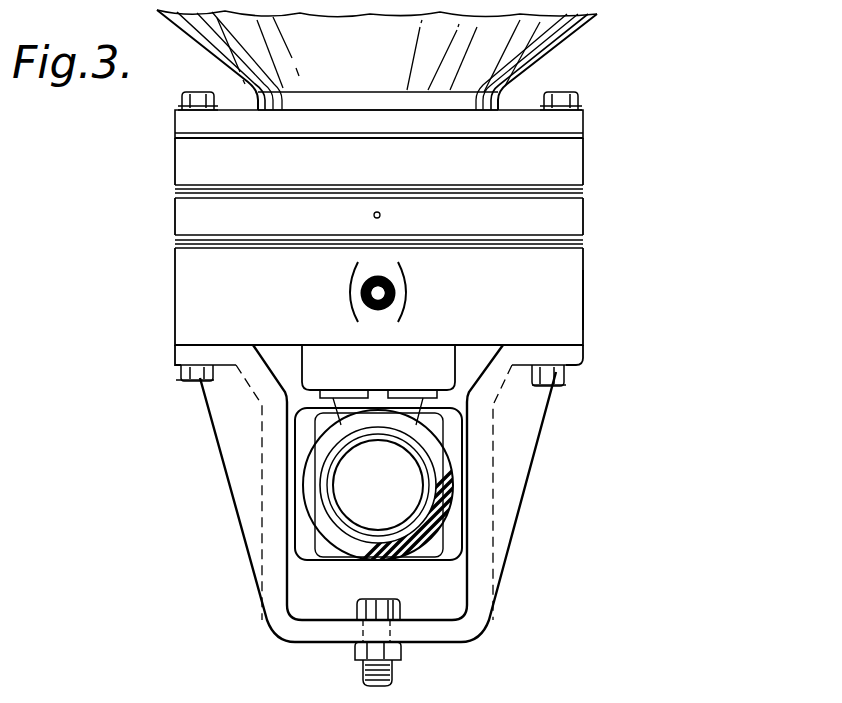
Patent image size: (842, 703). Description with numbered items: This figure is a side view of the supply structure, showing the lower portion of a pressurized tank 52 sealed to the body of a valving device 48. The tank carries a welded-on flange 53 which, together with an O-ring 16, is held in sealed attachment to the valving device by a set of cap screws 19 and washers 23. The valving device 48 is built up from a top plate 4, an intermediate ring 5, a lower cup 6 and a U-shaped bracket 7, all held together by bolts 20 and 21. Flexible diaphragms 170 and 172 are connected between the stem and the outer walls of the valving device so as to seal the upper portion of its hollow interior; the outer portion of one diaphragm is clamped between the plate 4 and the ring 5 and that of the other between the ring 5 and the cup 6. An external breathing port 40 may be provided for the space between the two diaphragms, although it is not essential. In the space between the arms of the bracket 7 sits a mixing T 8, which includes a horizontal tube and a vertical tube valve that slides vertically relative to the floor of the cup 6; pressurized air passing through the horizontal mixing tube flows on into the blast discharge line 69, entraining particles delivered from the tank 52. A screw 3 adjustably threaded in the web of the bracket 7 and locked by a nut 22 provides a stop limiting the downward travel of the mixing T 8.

The pressurized tank 52 is at (545, 41).
The cap screws 19 is at (206, 100).
The washers 23 is at (180, 101).
The welded-on flange 53 is at (186, 128).
The O-ring 16 is at (398, 143).
The top plate 4 is at (558, 165).
The flexible diaphragm 170 is at (178, 191).
The external breathing port 40 is at (381, 216).
The intermediate ring 5 is at (553, 219).
The flexible diaphragm 172 is at (178, 241).
The lower cup 6 is at (200, 291).
The valving device 48 is at (599, 304).
The bolt 20 is at (193, 382).
The bolt 21 is at (556, 387).
The U-shaped bracket 7 is at (272, 426).
The mixing T 8 is at (303, 471).
The blast discharge line 69 is at (447, 489).
The screw 3 is at (398, 606).
The nut 22 is at (396, 656).